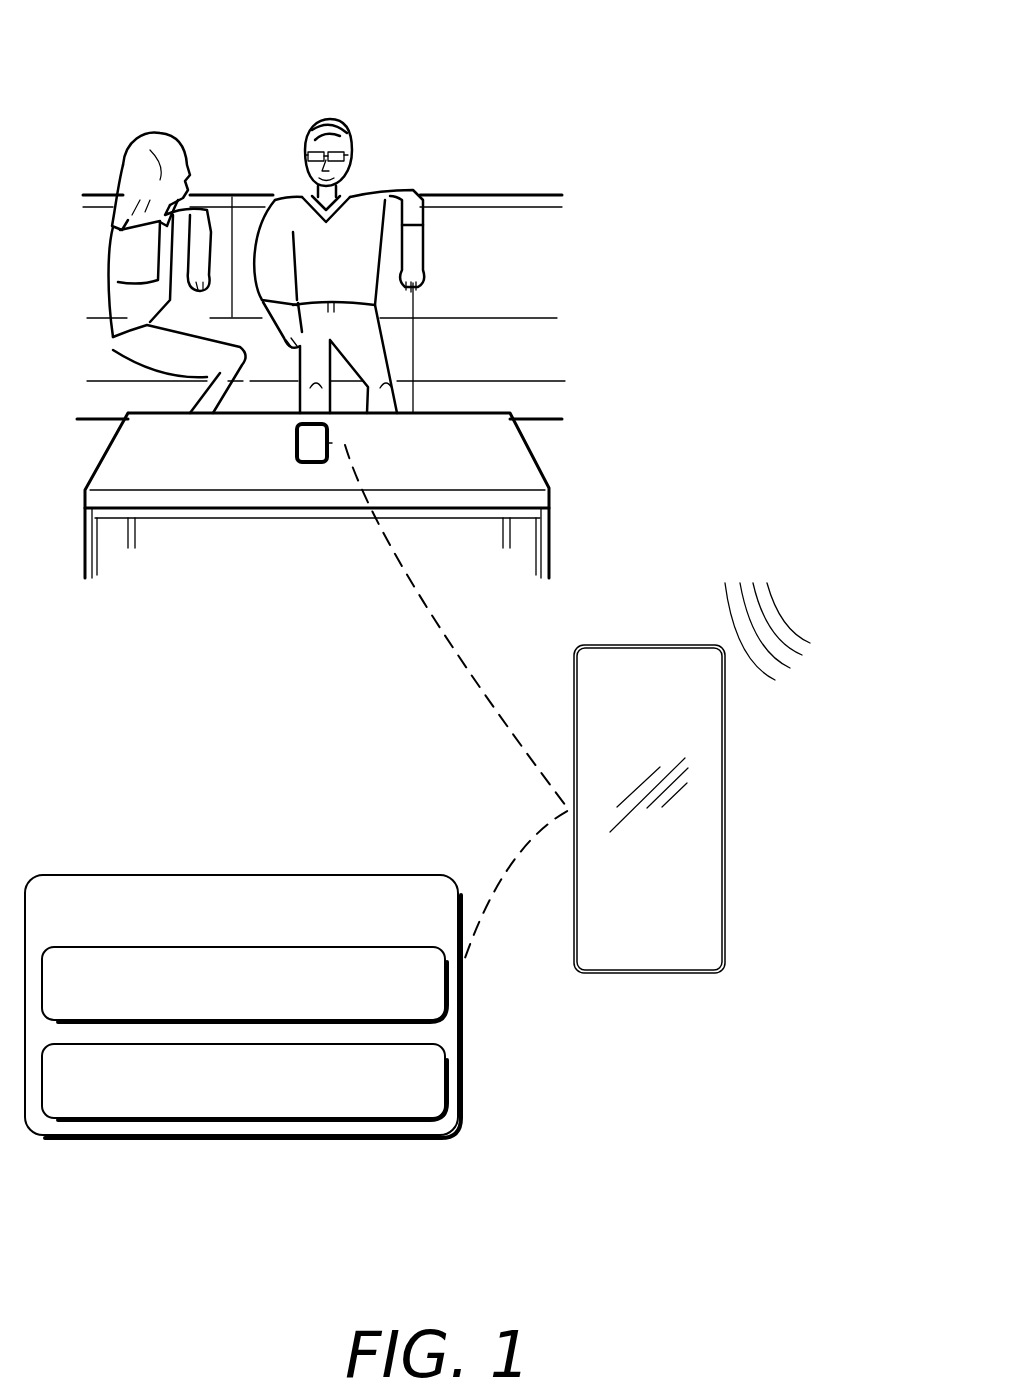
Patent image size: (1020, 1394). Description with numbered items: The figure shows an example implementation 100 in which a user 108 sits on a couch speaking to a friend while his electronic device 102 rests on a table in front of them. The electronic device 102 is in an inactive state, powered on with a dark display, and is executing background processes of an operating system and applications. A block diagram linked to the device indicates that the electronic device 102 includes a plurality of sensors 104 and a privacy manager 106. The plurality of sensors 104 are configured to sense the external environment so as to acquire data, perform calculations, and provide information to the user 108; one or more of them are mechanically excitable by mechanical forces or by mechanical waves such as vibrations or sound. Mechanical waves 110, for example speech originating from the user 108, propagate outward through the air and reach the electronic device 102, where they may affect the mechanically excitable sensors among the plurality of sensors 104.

The example implementation 100 is at (755, 54).
The electronic device 102 is at (223, 937).
The plurality of sensors 104 is at (223, 1007).
The privacy manager 106 is at (223, 1104).
The user 108 is at (332, 118).
The mechanical waves 110 is at (743, 563).